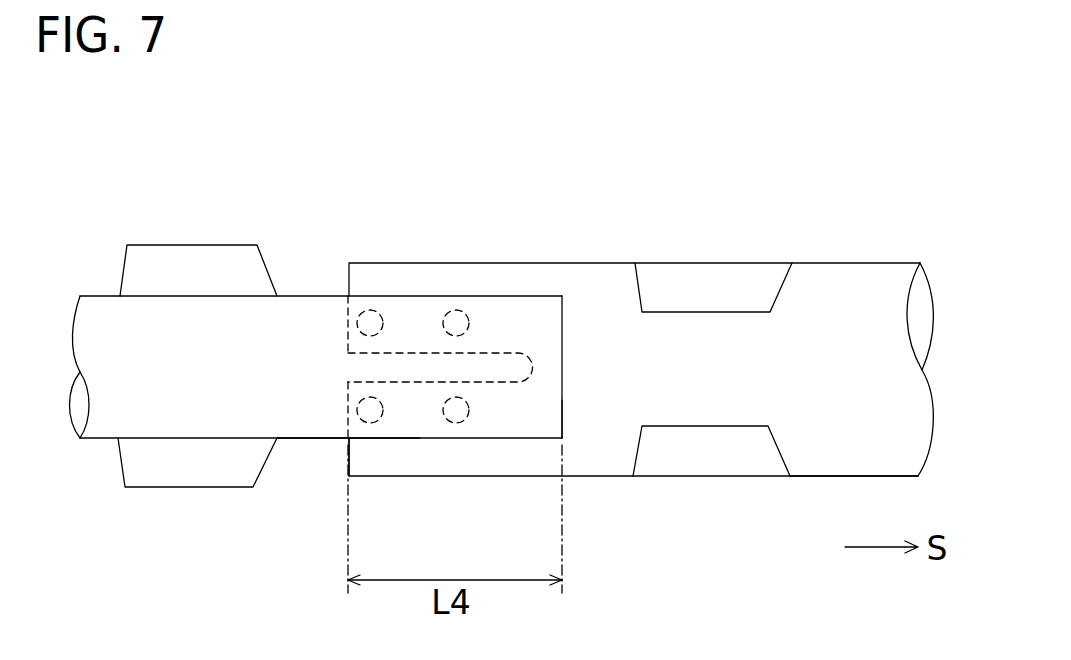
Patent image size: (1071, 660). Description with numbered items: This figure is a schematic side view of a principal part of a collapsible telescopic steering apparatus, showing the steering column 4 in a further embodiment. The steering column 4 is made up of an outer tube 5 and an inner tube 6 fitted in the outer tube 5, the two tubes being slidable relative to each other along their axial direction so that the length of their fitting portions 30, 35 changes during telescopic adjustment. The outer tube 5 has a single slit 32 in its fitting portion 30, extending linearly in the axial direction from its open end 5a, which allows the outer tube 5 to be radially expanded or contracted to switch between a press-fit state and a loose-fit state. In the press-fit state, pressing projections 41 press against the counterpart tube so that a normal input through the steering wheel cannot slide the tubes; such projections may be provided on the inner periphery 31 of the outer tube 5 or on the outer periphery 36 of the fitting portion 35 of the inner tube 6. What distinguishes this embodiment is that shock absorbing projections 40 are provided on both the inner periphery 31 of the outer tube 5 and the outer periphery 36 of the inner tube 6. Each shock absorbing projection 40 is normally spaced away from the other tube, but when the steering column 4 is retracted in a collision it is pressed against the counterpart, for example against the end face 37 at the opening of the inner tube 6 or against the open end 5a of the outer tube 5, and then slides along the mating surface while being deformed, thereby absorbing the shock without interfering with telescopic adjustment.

The steering column 4 is at (808, 193).
The outer tube 5 is at (843, 263).
The open end 5a is at (348, 448).
The inner tube 6 is at (98, 296).
The fitting portion 30 is at (425, 440).
The inner periphery 31 is at (832, 477).
The slit 32 is at (350, 365).
The fitting portion 35 is at (407, 440).
The outer periphery 36 is at (297, 438).
The end face 37 is at (562, 415).
The shock absorbing projection 40 is at (182, 253).
The pressing projection 41 is at (456, 310).